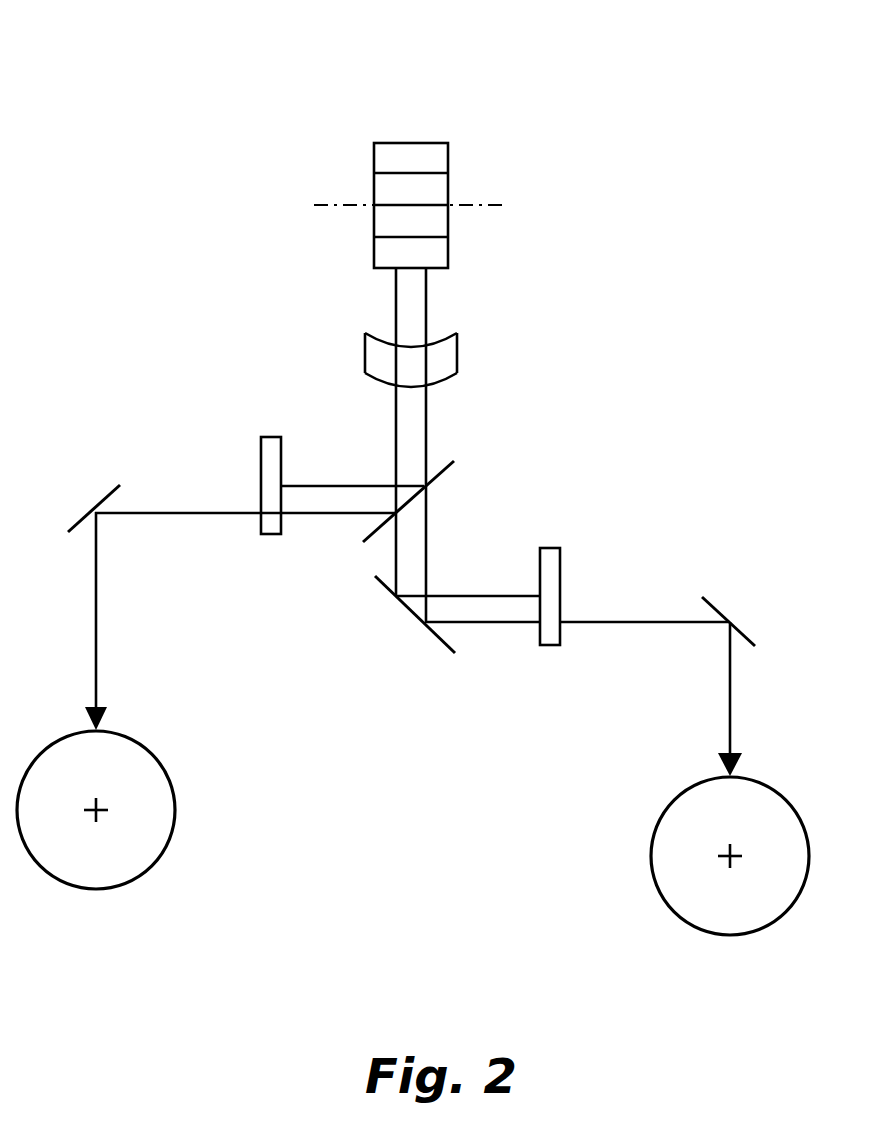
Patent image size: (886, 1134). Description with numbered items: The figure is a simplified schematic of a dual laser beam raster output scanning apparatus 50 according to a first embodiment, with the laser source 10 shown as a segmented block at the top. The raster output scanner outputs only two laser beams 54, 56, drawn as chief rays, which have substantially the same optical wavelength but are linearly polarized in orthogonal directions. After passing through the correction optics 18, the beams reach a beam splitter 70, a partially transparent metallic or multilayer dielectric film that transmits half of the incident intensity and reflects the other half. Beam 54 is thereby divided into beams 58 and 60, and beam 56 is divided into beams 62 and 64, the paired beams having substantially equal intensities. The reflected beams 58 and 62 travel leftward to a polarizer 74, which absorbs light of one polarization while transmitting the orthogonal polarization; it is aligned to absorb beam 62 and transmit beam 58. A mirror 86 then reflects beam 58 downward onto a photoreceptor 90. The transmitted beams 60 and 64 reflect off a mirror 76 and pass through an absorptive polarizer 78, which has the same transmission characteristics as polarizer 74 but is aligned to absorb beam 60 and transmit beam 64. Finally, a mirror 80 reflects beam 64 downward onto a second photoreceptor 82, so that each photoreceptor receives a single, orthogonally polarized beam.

The first embodiment apparatus 50 is at (622, 68).
The laser light source 10 is at (415, 143).
The laser beam 54 is at (395, 322).
The laser beam 56 is at (427, 317).
The correction optics 18 is at (457, 348).
The beam splitter 70 is at (445, 458).
The beam 62 is at (357, 486).
The polarizer 74 is at (270, 437).
The mirror 86 is at (110, 495).
The beam 58 is at (218, 510).
The photoreceptor 90 is at (150, 748).
The beam 60 is at (393, 543).
The mirror 76 is at (445, 643).
The absorptive polarizer 78 is at (552, 550).
The beam 64 is at (427, 520).
The mirror 80 is at (715, 607).
The photoreceptor 82 is at (772, 783).